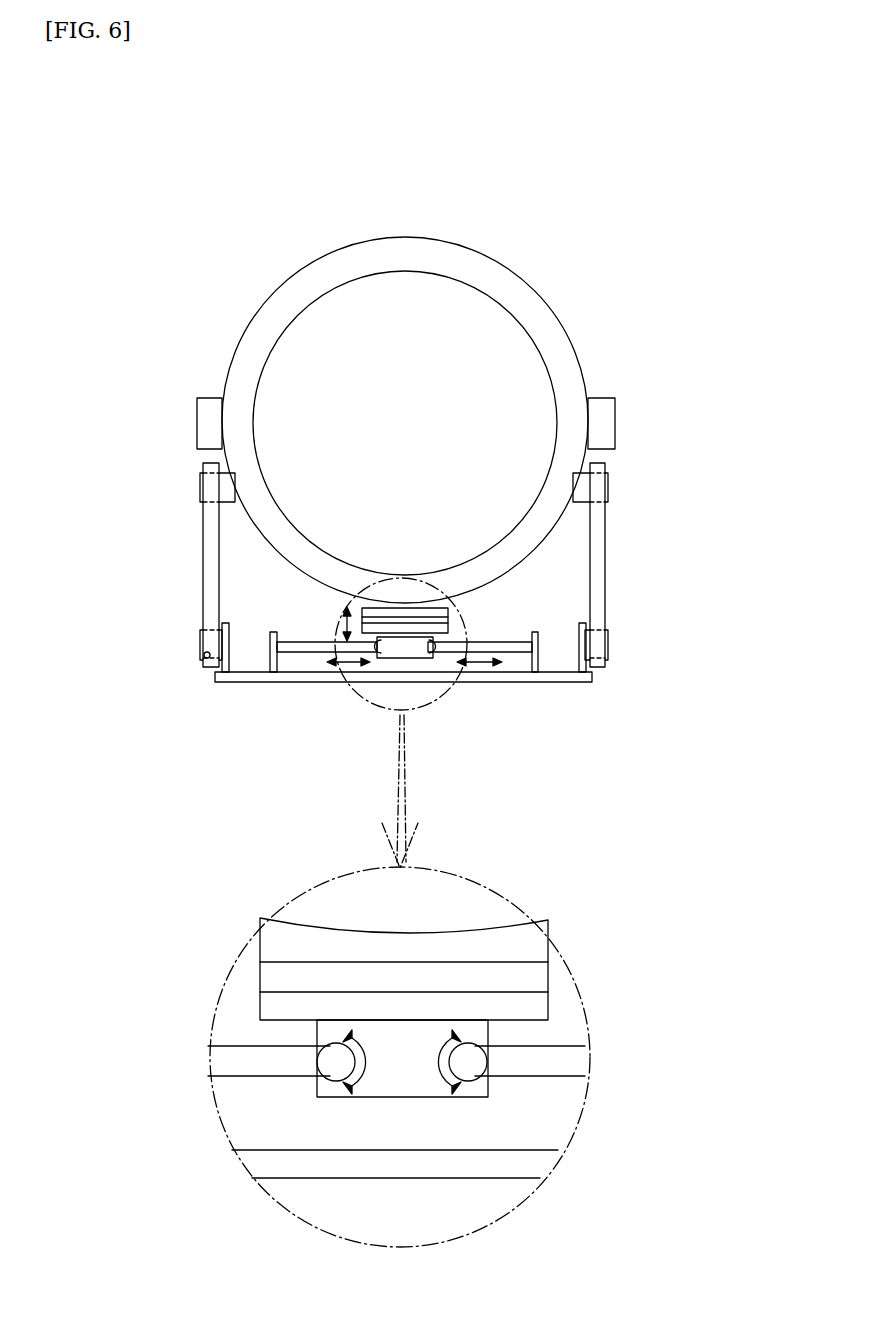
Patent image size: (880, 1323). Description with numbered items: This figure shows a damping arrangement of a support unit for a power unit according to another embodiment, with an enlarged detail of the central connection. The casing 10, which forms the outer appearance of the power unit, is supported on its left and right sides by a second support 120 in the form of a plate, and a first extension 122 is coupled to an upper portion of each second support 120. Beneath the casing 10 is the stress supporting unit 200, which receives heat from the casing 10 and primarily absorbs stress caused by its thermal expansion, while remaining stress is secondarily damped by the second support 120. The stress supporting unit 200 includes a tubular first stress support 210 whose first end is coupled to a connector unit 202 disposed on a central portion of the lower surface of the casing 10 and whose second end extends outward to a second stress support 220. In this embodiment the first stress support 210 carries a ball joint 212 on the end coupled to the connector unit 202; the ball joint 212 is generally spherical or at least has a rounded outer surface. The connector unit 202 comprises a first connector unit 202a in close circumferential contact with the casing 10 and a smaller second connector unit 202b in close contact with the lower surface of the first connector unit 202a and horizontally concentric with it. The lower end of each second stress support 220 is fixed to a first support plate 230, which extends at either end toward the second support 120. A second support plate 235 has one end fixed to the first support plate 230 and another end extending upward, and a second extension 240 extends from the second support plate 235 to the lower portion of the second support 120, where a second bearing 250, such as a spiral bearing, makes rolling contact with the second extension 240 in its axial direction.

The casing 10 is at (506, 253).
The second support 120 is at (602, 552).
The first extension 122 is at (608, 482).
The stress supporting unit 200 is at (118, 86).
The connector unit 202 is at (493, 936).
The first connector unit 202a is at (448, 612).
The second connector unit 202b is at (433, 650).
The first stress support 210 is at (322, 652).
The ball joint 212 is at (488, 1041).
The second stress support 220 is at (270, 655).
The first support plate 230 is at (508, 655).
The second support plate 235 is at (223, 627).
The second extension 240 is at (202, 640).
The second bearing 250 is at (204, 657).